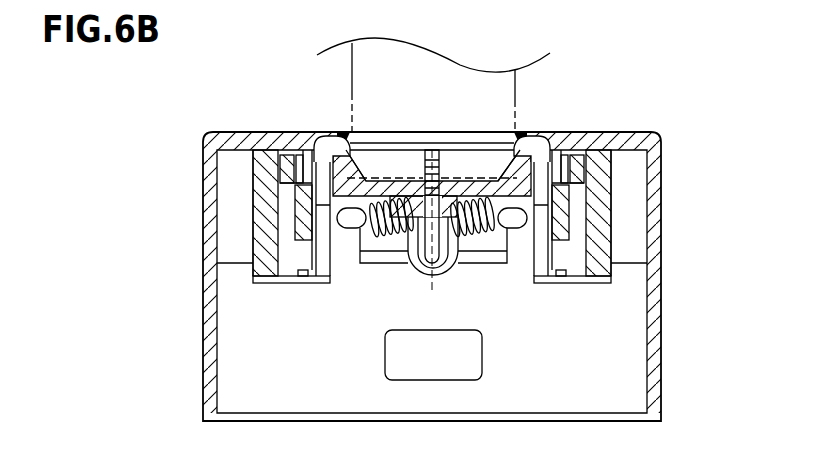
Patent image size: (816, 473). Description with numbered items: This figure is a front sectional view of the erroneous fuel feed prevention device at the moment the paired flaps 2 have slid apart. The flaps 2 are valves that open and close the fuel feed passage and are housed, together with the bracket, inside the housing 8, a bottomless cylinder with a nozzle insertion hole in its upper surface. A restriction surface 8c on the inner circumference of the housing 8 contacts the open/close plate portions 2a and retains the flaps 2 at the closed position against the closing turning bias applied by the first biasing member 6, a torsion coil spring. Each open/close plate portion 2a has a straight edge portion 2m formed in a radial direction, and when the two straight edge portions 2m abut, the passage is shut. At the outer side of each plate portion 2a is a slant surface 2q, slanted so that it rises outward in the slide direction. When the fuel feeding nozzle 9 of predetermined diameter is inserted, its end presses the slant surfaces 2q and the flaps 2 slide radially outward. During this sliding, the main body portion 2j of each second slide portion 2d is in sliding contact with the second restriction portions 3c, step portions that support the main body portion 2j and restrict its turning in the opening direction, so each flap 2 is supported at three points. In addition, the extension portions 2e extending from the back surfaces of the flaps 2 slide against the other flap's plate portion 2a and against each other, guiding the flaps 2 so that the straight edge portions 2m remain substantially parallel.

The flap 2 is at (394, 176).
The open/close plate portion 2a is at (377, 185).
The second slide portion 2d is at (283, 166).
The extension portion 2e is at (397, 238).
The main body portion 2j is at (670, 180).
The straight edge portion 2m is at (431, 150).
The slant surface 2q is at (345, 168).
The second restriction portion 3c is at (300, 218).
The first biasing member 6 is at (481, 238).
The housing 8 is at (620, 130).
The restriction surface 8c is at (318, 135).
The fuel feeding nozzle 9 is at (347, 93).